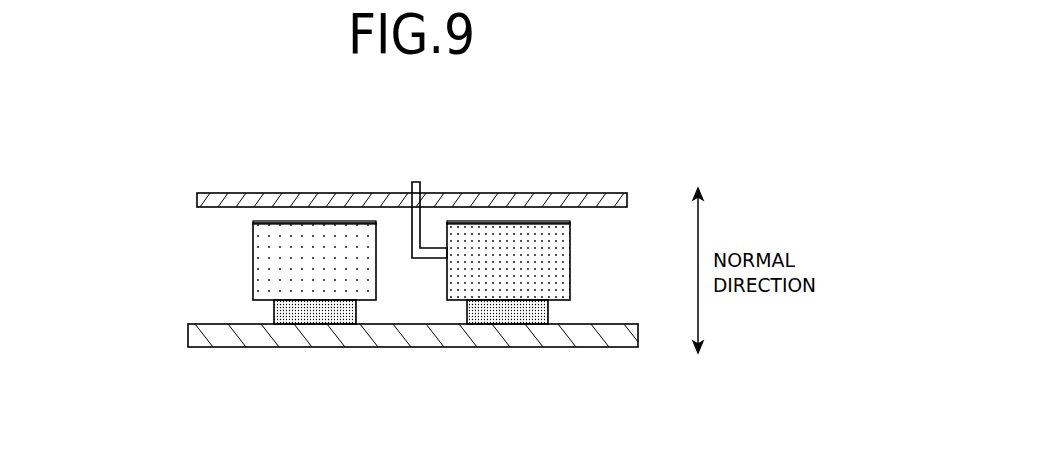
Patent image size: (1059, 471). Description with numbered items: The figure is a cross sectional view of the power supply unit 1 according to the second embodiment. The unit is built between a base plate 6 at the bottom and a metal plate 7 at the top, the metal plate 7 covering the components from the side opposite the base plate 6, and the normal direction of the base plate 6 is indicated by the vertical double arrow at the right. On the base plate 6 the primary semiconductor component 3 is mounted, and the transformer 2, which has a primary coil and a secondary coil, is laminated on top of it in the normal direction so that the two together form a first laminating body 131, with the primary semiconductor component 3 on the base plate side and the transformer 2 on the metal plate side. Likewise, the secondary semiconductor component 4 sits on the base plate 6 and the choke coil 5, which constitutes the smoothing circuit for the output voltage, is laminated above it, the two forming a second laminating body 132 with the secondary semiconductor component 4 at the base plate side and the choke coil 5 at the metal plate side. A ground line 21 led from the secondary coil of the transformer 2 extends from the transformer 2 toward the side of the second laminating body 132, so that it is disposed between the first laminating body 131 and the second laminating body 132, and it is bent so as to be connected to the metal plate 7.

The power supply unit 1 is at (633, 171).
The transformer 2 is at (507, 245).
The choke coil 5 is at (293, 245).
The primary semiconductor component 3 is at (520, 313).
The secondary semiconductor component 4 is at (318, 313).
The base plate 6 is at (425, 335).
The metal plate 7 is at (328, 200).
The ground line 21 is at (413, 220).
The first laminating body 131 is at (490, 222).
The second laminating body 132 is at (262, 222).